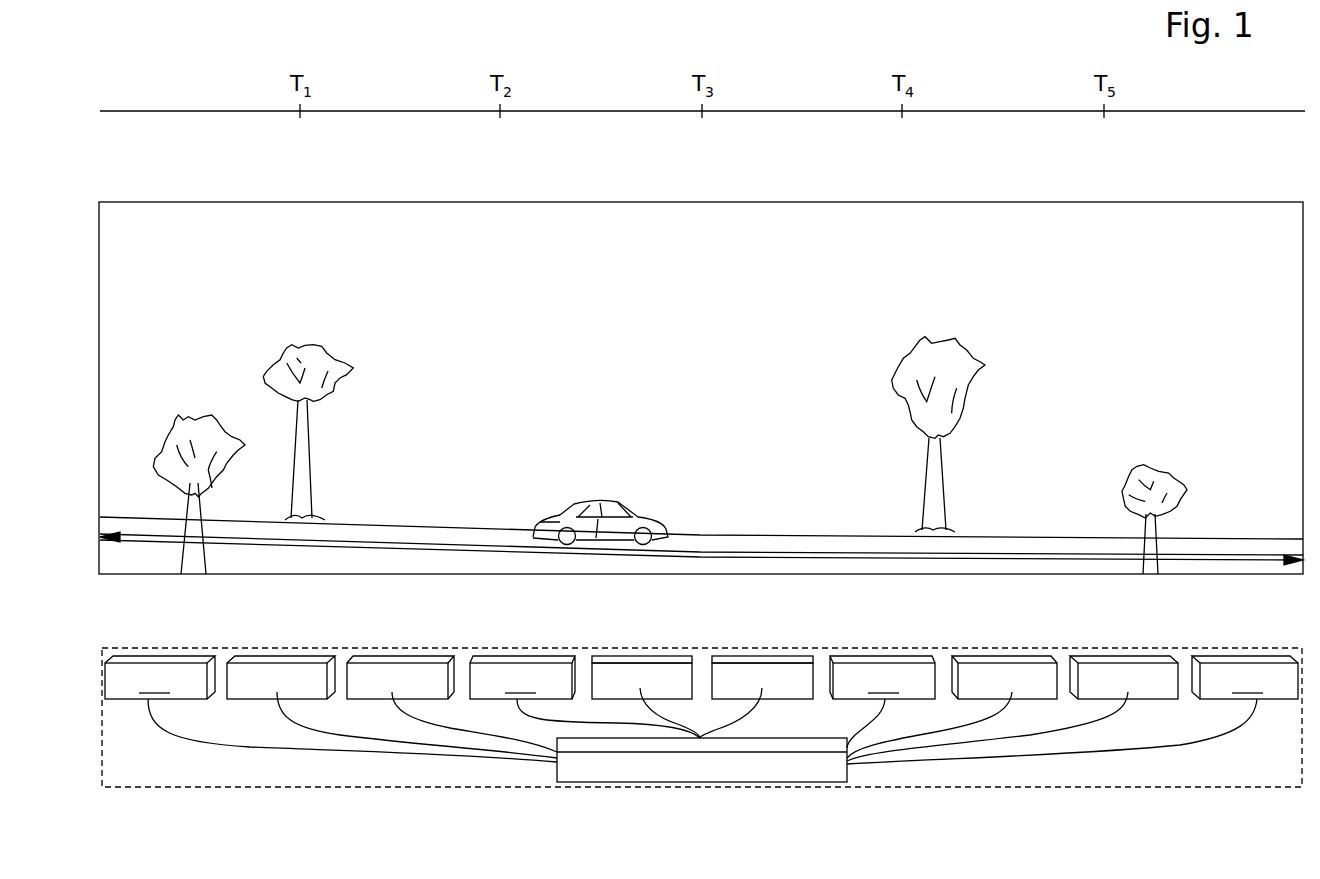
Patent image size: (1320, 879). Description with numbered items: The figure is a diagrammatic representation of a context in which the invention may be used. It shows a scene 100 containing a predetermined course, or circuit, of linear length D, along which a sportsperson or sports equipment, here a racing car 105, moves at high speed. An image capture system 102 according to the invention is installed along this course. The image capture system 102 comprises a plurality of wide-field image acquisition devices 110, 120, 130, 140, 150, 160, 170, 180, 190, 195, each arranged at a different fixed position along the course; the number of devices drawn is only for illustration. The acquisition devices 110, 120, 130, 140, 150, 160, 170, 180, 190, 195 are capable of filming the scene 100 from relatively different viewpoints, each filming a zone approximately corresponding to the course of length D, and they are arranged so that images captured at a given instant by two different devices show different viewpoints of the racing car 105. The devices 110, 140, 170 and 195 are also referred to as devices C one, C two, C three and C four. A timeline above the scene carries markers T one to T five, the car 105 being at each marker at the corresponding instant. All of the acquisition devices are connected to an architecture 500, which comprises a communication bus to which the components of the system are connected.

The scene 100 is at (952, 249).
The image capture system 102 is at (1274, 788).
The racing car 105 is at (642, 491).
The wide-field image acquisition device 110 is at (157, 658).
The wide-field image acquisition device 120 is at (274, 658).
The wide-field image acquisition device 130 is at (389, 658).
The wide-field image acquisition device 140 is at (507, 658).
The wide-field image acquisition device 150 is at (621, 658).
The wide-field image acquisition device 160 is at (737, 658).
The wide-field image acquisition device 170 is at (872, 658).
The wide-field image acquisition device 180 is at (987, 658).
The wide-field image acquisition device 190 is at (1107, 658).
The wide-field image acquisition device 195 is at (1247, 658).
The architecture 500 is at (722, 776).